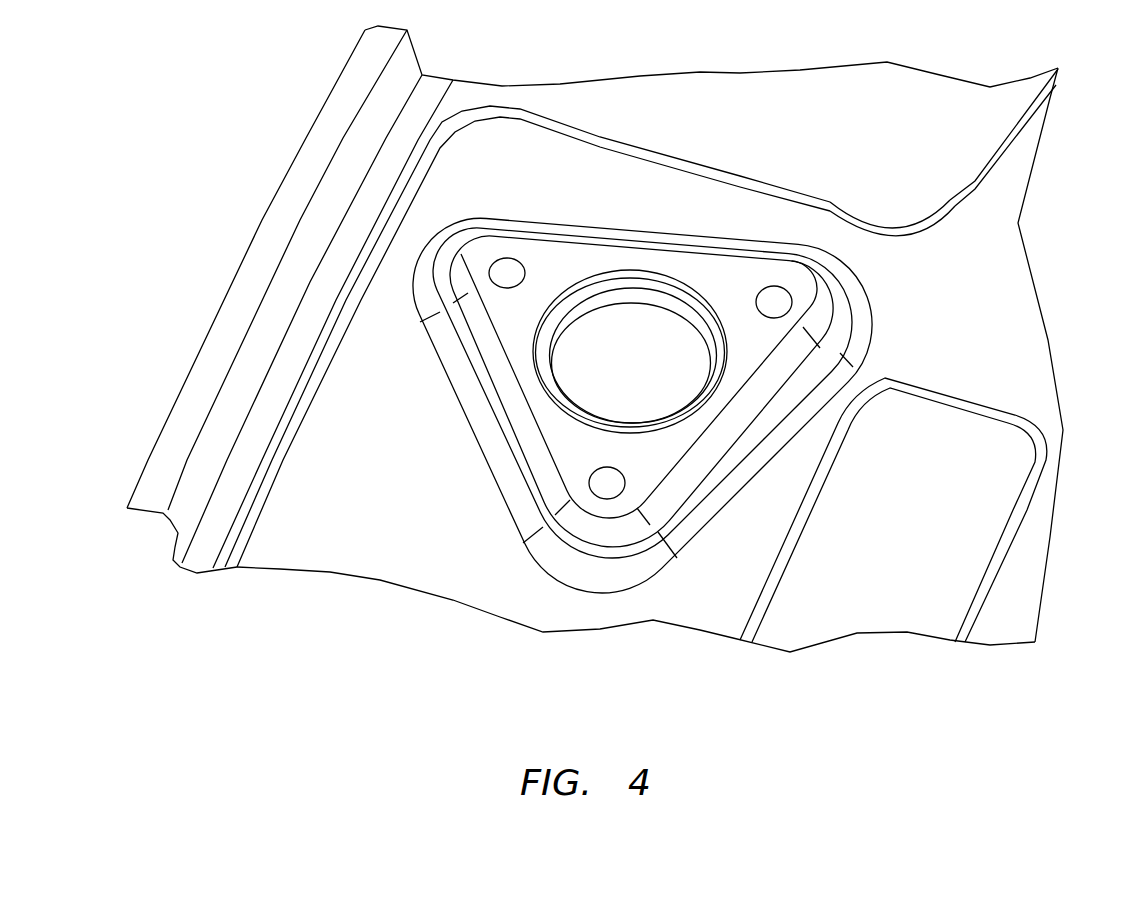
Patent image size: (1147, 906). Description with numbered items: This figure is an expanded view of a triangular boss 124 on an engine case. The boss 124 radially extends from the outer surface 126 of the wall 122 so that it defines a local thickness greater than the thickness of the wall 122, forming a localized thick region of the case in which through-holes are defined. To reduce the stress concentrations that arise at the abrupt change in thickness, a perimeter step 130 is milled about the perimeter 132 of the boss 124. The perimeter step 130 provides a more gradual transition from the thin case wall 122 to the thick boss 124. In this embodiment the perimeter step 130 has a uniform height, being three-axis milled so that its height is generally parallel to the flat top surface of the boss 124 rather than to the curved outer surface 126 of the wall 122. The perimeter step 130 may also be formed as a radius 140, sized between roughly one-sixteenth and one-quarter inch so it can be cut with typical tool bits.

The wall 122 is at (1038, 363).
The boss 124 is at (669, 584).
The outer surface 126 is at (988, 323).
The perimeter step 130 is at (546, 469).
The perimeter 132 is at (600, 562).
The radius 140 is at (690, 468).